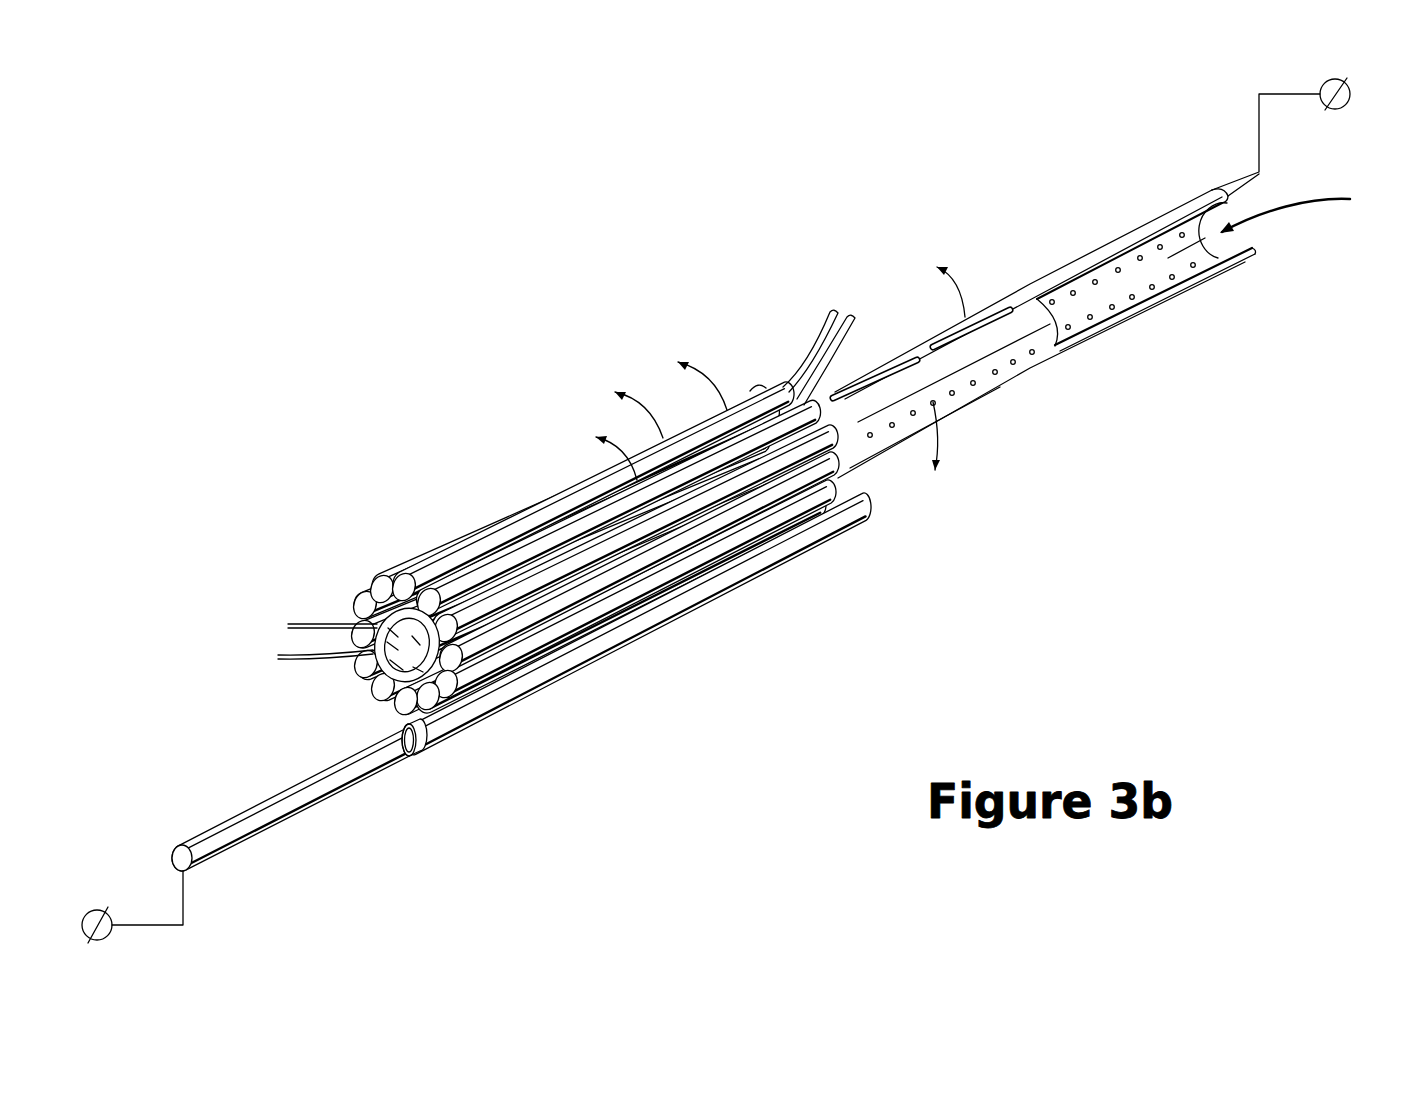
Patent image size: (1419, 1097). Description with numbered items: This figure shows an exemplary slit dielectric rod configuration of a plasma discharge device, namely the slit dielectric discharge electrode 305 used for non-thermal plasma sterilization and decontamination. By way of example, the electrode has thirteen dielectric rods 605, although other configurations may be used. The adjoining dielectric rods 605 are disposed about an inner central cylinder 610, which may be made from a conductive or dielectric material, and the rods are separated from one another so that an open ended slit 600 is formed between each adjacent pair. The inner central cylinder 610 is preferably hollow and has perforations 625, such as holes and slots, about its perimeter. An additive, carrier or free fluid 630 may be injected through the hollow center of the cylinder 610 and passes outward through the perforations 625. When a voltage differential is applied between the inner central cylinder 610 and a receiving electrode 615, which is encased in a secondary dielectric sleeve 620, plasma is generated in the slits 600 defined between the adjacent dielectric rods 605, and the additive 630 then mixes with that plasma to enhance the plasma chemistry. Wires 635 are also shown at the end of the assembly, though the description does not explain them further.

The slit dielectric discharge electrode 305 is at (565, 277).
The open ended slit 600 is at (755, 422).
The dielectric rods 605 is at (497, 567).
The inner central cylinder 610 is at (375, 687).
The receiving electrode 615 is at (273, 810).
The secondary dielectric sleeve 620 is at (463, 722).
The perforations 625 is at (992, 317).
The additive, carrier or free fluid 630 is at (1320, 216).
The wires 635 is at (308, 607).